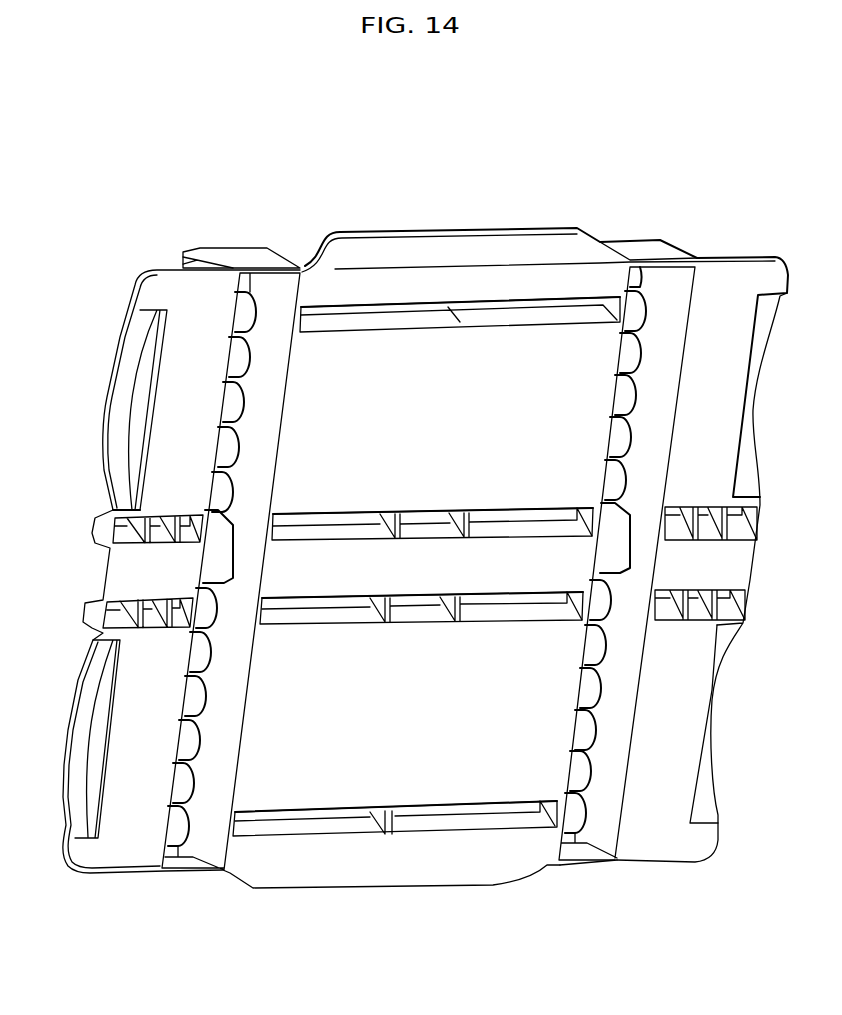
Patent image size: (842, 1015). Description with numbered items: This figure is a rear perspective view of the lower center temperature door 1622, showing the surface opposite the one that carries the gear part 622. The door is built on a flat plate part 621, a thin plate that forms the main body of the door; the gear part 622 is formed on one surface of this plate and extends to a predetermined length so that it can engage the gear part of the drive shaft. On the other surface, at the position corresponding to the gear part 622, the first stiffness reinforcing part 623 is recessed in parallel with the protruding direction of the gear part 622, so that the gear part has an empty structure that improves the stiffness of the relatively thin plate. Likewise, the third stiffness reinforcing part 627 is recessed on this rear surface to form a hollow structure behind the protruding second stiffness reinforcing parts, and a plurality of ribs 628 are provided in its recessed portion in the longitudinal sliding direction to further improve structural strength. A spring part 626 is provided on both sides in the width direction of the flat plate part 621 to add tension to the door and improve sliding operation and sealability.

The lower center temperature door 1622 is at (470, 173).
The flat plate part 621 is at (174, 292).
The gear part 622 is at (233, 248).
The first stiffness reinforcing part 623 is at (278, 341).
The spring part 626 is at (118, 333).
The third stiffness reinforcing part 627 is at (527, 313).
The ribs 628 is at (152, 538).